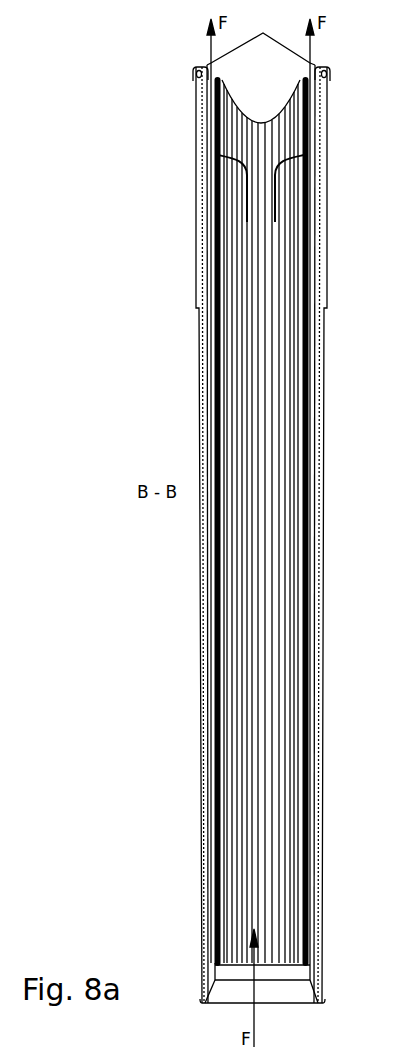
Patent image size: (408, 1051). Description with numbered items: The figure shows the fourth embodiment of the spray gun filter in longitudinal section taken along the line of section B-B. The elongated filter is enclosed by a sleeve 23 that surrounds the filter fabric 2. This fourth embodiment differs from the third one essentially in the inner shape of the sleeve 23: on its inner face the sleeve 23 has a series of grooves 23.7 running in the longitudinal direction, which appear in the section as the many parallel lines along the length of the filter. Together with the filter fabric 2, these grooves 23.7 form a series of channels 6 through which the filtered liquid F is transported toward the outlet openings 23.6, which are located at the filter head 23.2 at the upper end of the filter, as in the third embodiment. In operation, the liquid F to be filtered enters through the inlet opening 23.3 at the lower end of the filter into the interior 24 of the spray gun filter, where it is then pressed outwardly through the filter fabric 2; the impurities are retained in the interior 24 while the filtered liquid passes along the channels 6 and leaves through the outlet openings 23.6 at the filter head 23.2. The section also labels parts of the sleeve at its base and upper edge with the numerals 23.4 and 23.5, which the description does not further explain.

The filter fabric 2 is at (186, 521).
The channels 6 is at (334, 521).
The sleeve 23 is at (282, 534).
The filter head 23.2 is at (266, 31).
The inlet opening 23.3 is at (286, 1021).
The housing base section 23.4 is at (296, 983).
The housing edge lug 23.5 is at (300, 63).
The outlet openings 23.6 is at (265, 37).
The grooves 23.7 is at (330, 523).
The interior 24 is at (297, 523).